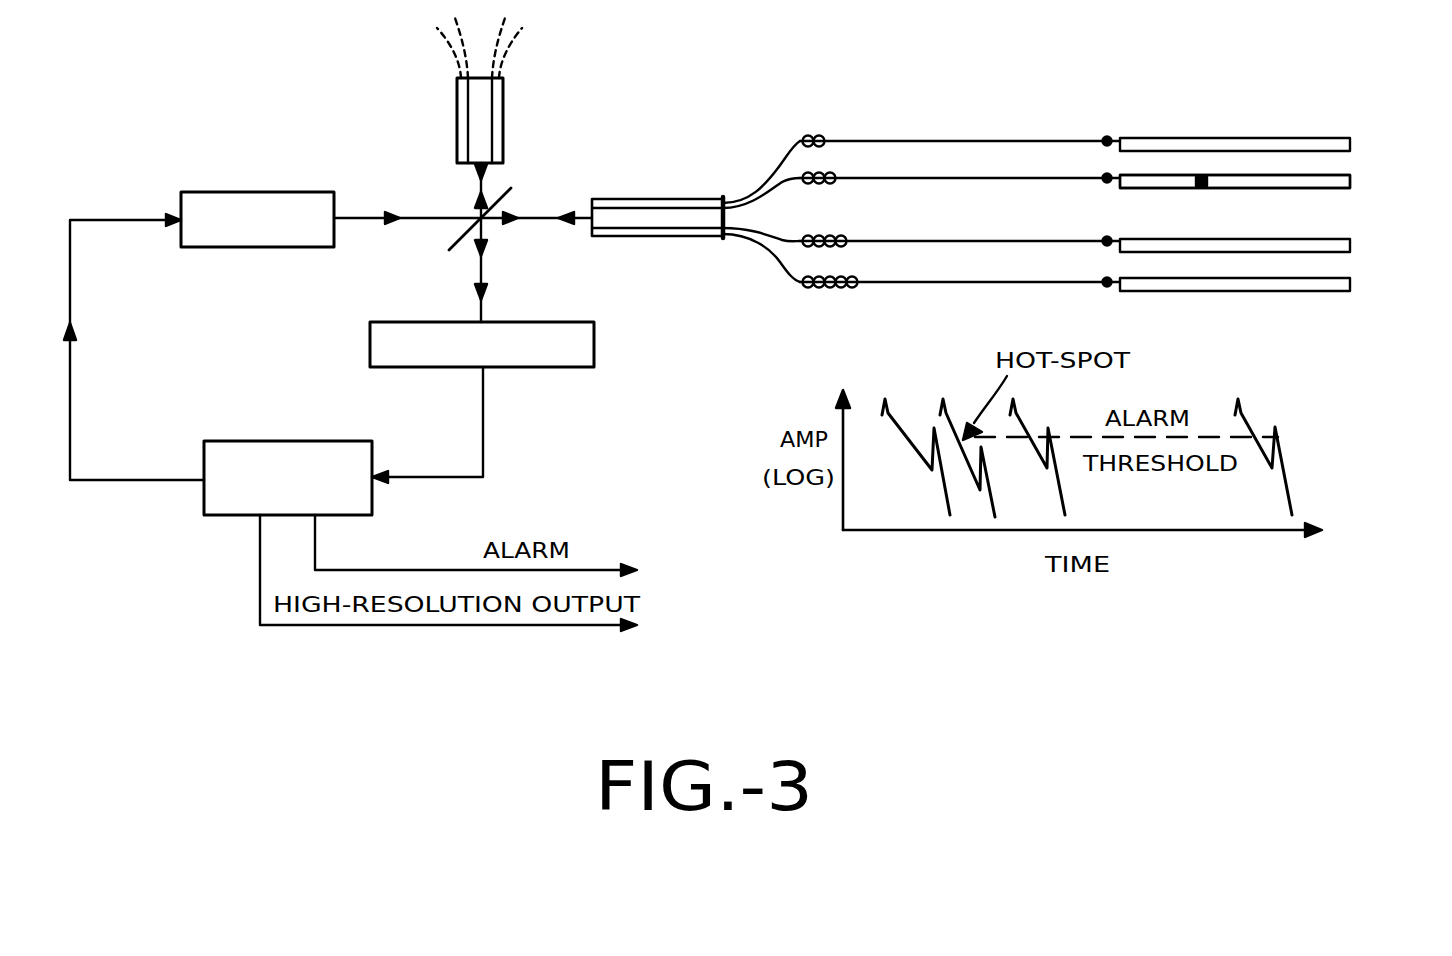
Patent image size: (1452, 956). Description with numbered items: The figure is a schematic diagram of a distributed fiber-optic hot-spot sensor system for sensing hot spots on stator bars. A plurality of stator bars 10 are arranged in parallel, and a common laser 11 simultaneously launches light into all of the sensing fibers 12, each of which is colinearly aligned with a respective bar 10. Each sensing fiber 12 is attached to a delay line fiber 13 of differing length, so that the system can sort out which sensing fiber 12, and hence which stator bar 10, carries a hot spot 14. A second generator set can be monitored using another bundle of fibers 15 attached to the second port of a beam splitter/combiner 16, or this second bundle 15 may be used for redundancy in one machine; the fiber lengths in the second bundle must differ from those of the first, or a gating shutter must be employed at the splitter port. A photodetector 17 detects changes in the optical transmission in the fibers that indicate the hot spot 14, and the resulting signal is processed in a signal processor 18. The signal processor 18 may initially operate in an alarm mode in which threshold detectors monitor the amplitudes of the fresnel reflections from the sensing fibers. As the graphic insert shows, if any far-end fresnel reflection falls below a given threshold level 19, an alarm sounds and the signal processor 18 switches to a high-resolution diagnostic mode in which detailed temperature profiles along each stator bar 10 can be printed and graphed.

The stator bars 10 is at (1321, 239).
The common laser 11 is at (243, 232).
The sensing fibers 12 is at (1135, 178).
The delay line fiber 13 is at (784, 178).
The hot spot 14 is at (1203, 186).
The bundle of fibers 15 is at (505, 119).
The beam splitter/combiner 16 is at (469, 231).
The photodetector 17 is at (462, 358).
The signal processor 18 is at (264, 496).
The threshold level 19 is at (1232, 433).